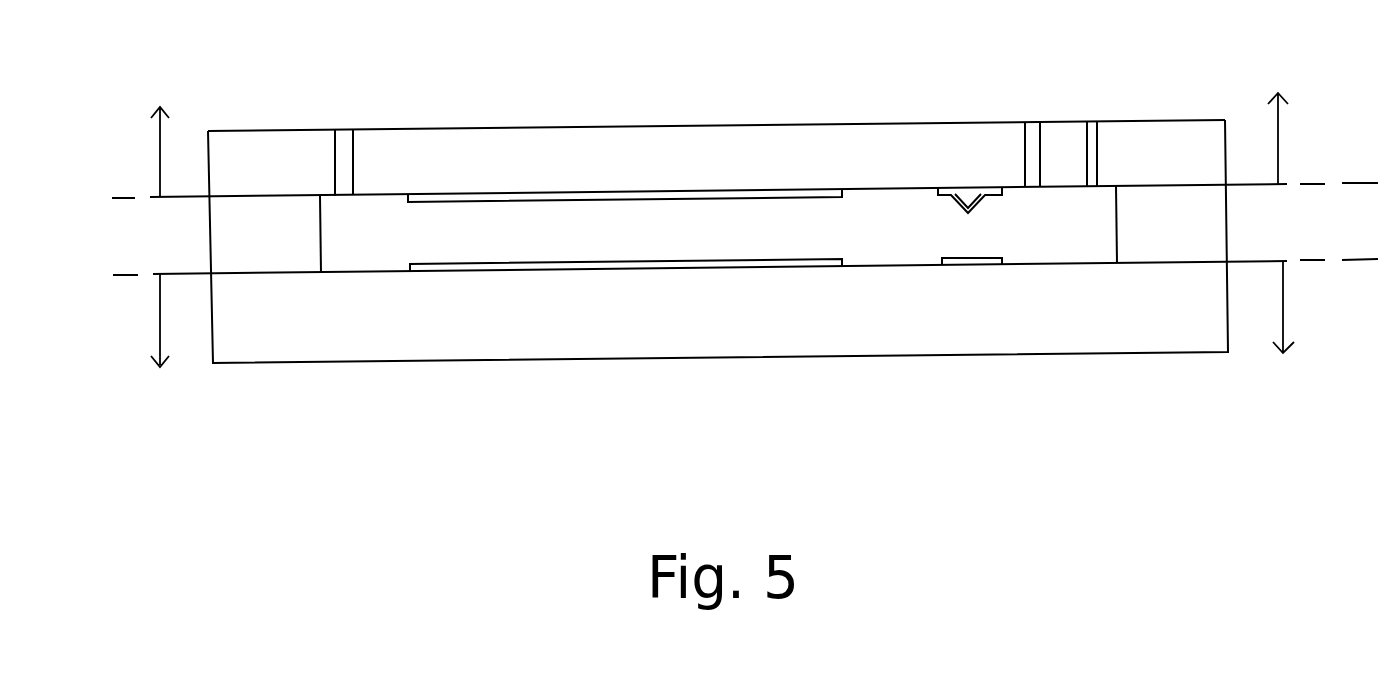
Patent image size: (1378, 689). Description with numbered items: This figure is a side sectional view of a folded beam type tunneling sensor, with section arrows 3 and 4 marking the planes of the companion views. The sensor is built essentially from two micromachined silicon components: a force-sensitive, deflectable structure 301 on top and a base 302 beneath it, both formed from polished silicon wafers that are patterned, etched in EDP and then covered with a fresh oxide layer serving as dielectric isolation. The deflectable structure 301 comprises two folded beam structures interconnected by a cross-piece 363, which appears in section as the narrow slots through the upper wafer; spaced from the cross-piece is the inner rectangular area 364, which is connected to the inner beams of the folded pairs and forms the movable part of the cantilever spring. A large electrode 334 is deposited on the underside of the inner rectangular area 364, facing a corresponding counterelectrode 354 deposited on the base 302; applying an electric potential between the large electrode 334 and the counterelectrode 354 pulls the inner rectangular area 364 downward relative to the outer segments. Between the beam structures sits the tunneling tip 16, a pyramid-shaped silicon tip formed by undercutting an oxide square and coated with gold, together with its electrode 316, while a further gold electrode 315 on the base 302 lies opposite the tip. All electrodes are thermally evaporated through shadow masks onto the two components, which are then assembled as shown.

The tunneling tip 16 is at (970, 193).
The deflectable structure 301 is at (322, 148).
The base 302 is at (282, 333).
The gold electrode 315 is at (978, 267).
The tip electrode 316 is at (948, 192).
The large electrode 334 is at (763, 197).
The counterelectrode 354 is at (548, 268).
The cross-piece 363 is at (1073, 150).
The inner rectangular area 364 is at (613, 158).
The section line 3- 3 is at (745, 342).
The section line 4- 4 is at (745, 118).